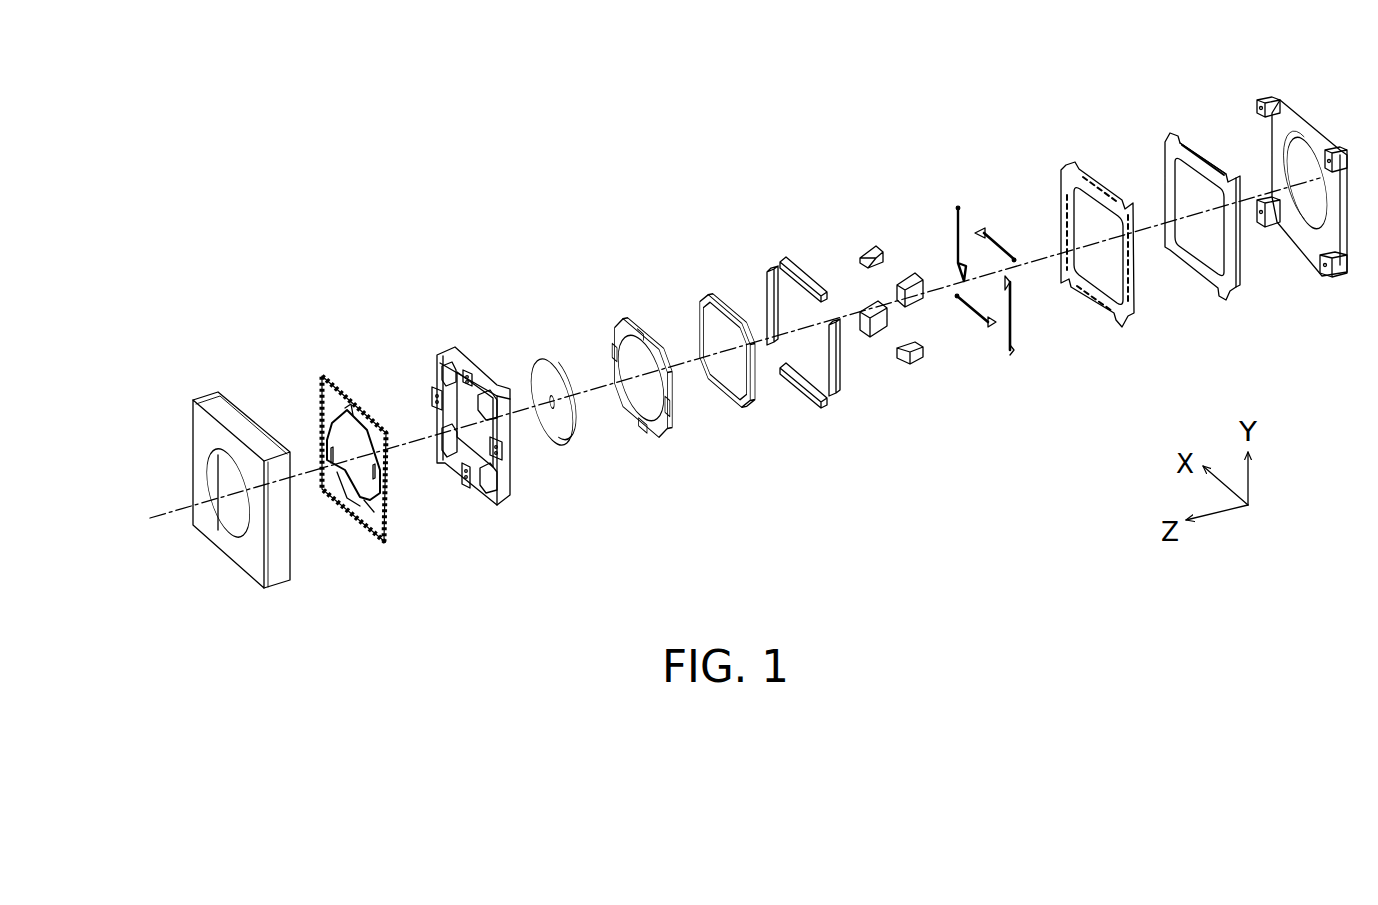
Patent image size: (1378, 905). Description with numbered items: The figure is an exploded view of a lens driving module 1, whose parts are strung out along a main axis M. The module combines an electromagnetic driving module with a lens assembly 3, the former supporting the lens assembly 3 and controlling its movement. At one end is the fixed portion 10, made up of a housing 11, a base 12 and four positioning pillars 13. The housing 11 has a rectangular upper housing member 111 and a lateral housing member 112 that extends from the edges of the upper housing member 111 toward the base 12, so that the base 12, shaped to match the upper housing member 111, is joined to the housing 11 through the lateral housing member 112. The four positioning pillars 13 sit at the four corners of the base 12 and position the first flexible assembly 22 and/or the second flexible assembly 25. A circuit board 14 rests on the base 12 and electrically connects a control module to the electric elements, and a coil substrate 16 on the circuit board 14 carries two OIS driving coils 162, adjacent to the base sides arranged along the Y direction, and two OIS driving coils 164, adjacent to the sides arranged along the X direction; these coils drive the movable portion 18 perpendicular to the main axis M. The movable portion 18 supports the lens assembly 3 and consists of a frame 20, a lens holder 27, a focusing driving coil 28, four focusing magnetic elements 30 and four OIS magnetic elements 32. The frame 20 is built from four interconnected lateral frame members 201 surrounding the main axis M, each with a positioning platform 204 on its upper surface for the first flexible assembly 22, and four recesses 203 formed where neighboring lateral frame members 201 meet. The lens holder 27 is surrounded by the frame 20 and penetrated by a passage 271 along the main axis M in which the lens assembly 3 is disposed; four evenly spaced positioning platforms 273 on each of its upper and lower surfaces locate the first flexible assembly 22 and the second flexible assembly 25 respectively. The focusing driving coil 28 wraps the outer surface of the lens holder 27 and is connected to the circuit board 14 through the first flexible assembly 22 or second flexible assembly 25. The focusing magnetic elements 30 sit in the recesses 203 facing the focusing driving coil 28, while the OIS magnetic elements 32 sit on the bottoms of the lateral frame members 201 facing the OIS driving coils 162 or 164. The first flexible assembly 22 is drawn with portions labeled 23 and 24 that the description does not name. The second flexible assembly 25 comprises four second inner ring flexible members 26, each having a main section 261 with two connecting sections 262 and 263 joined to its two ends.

The lens driving module 1 is at (238, 146).
The fixed portion 10 is at (405, 42).
The housing 11 is at (204, 388).
The upper housing member 111 is at (212, 441).
The lateral housing member 112 is at (233, 412).
The base 12 is at (1296, 130).
The positioning pillars 13 is at (1271, 97).
The circuit board 14 is at (1172, 133).
The coil substrate 16 is at (1066, 166).
The OIS driving coils 162 is at (1062, 214).
The OIS driving coils 164 is at (1106, 324).
The movable portion 18 is at (545, 30).
The frame 20 is at (444, 334).
The lateral frame members 201 is at (501, 480).
The recesses 203 is at (462, 442).
The positioning platform 204 is at (468, 484).
The first flexible assembly 22 is at (317, 364).
The spring outer portion 23 is at (388, 522).
The spring inner portion 24 is at (357, 490).
The second flexible assembly 25 is at (954, 194).
The second inner ring flexible members 26 is at (1006, 336).
The main section 261 is at (1011, 346).
The connecting section 262 is at (1011, 350).
The connecting section 263 is at (1014, 293).
The lens holder 27 is at (629, 321).
The passage 271 is at (648, 386).
The positioning platforms 273 is at (613, 366).
The focusing driving coil 28 is at (711, 297).
The lens assembly 3 is at (539, 354).
The focusing magnetic elements 30 is at (908, 278).
The OIS magnetic elements 32 is at (784, 264).
The main axis M is at (721, 357).